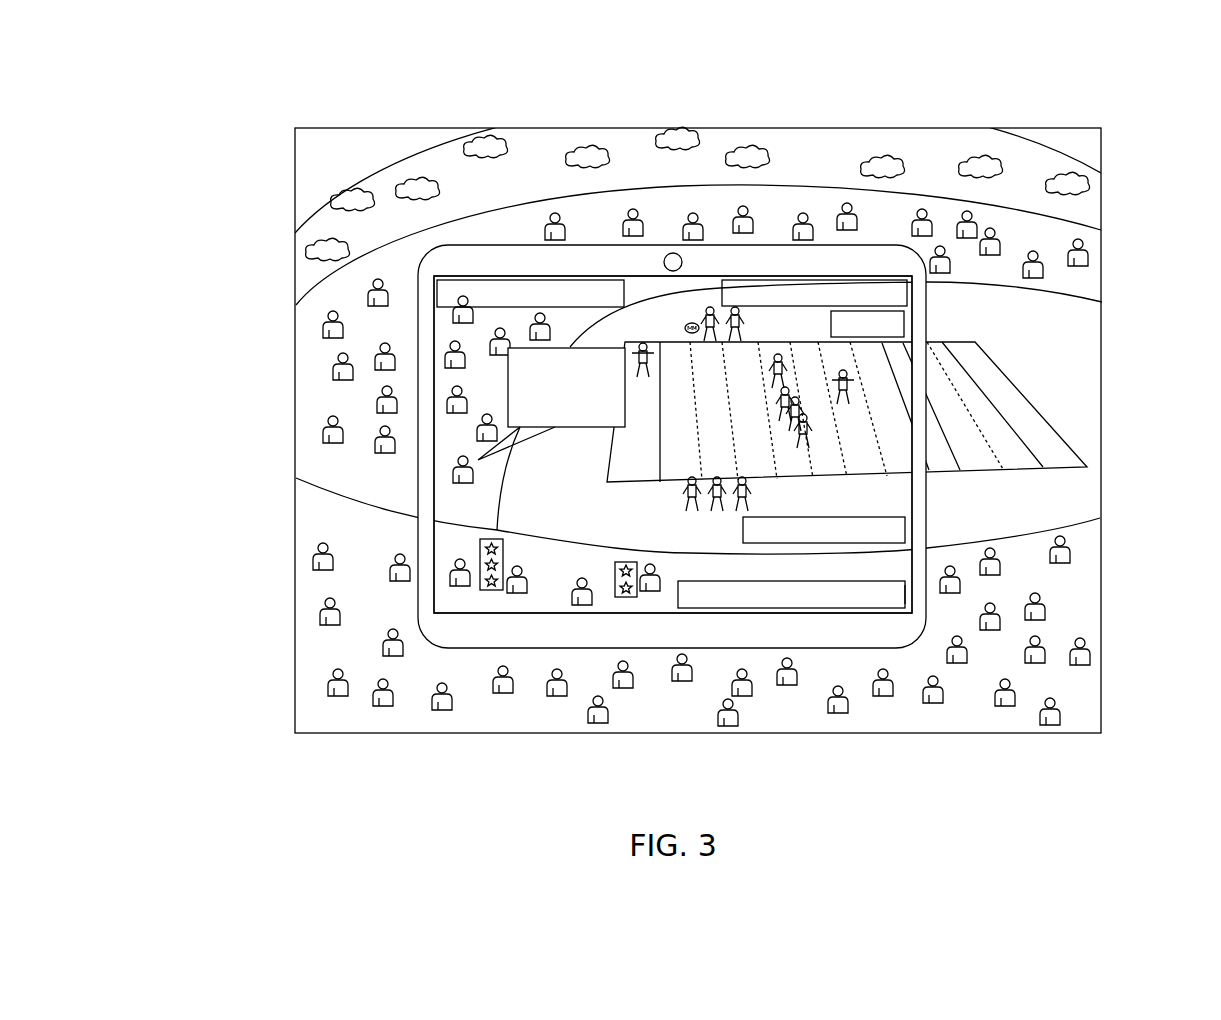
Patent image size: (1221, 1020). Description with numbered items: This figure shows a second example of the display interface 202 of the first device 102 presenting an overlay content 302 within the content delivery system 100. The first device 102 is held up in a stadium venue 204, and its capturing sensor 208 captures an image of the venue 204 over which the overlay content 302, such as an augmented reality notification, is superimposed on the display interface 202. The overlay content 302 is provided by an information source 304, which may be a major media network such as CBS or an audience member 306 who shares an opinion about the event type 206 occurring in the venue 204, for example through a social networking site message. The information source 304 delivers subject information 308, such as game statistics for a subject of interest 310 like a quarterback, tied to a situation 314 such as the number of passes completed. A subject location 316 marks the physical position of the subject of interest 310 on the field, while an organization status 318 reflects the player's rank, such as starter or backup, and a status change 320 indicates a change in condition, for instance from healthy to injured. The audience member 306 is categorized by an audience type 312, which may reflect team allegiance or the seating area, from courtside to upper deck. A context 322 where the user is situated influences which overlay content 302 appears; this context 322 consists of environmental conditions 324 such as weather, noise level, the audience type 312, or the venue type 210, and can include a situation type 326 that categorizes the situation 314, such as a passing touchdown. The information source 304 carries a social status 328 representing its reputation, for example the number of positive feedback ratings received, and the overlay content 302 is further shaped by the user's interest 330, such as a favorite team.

The content delivery system 100 is at (267, 87).
The first device 102 is at (453, 243).
The display interface 202 is at (430, 500).
The venue 204 is at (1087, 146).
The event type 206 is at (840, 612).
The capturing sensor 208 is at (671, 253).
The venue type 210 is at (831, 185).
The overlay content 302 is at (520, 415).
The information source 304 is at (900, 332).
The audience member 306 is at (450, 577).
The subject information 308 is at (897, 290).
The subject of interest 310 is at (858, 372).
The audience type 312 is at (330, 360).
The situation 314 is at (683, 318).
The subject location 316 is at (640, 345).
The organization status 318 is at (750, 478).
The status change 320 is at (905, 520).
The context 322 is at (398, 127).
The environmental condition 324 is at (498, 140).
The situation type 326 is at (440, 288).
The social status 328 is at (637, 597).
The user's interest 330 is at (907, 600).